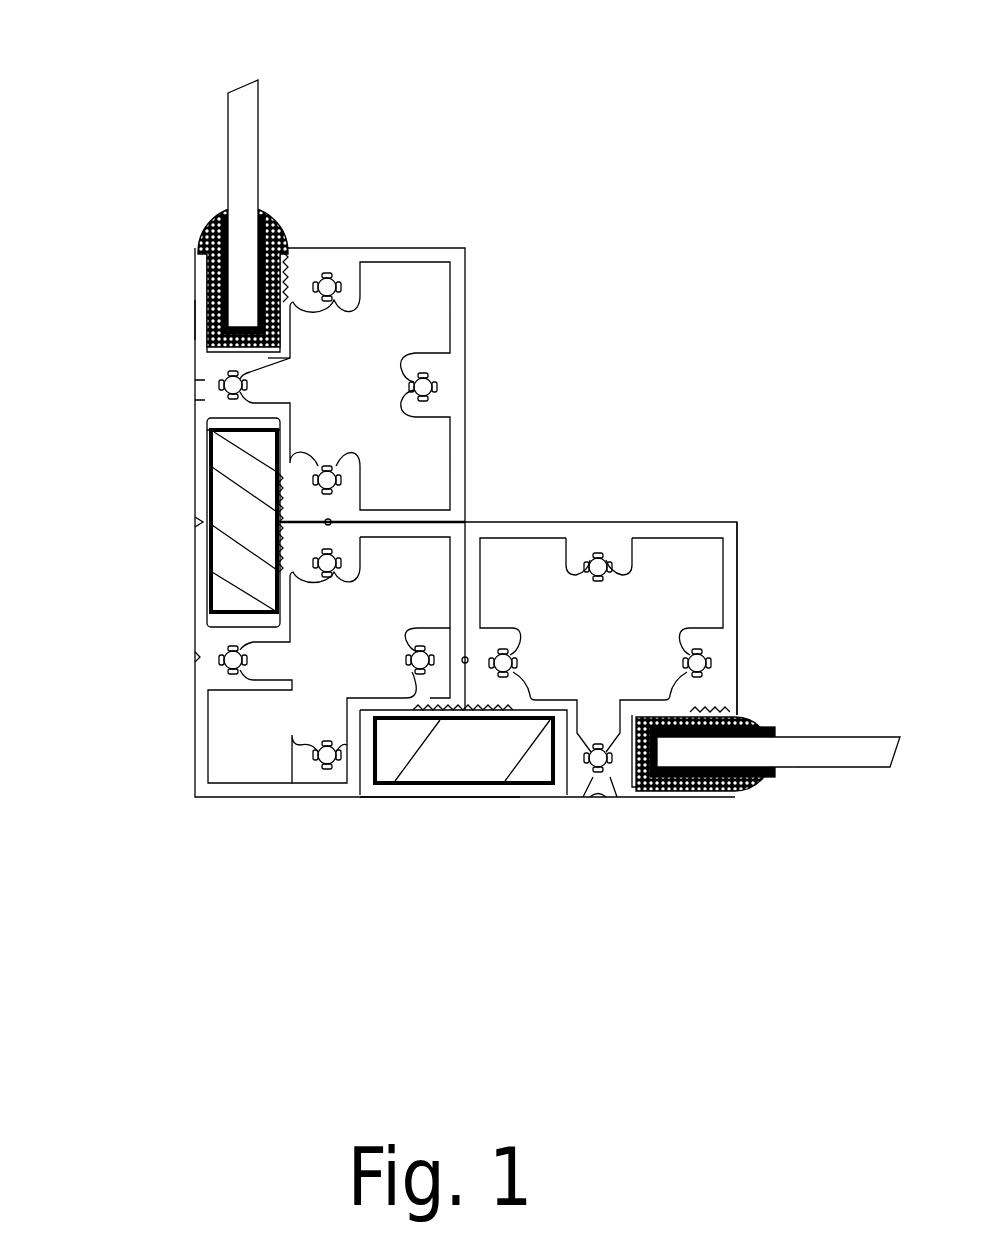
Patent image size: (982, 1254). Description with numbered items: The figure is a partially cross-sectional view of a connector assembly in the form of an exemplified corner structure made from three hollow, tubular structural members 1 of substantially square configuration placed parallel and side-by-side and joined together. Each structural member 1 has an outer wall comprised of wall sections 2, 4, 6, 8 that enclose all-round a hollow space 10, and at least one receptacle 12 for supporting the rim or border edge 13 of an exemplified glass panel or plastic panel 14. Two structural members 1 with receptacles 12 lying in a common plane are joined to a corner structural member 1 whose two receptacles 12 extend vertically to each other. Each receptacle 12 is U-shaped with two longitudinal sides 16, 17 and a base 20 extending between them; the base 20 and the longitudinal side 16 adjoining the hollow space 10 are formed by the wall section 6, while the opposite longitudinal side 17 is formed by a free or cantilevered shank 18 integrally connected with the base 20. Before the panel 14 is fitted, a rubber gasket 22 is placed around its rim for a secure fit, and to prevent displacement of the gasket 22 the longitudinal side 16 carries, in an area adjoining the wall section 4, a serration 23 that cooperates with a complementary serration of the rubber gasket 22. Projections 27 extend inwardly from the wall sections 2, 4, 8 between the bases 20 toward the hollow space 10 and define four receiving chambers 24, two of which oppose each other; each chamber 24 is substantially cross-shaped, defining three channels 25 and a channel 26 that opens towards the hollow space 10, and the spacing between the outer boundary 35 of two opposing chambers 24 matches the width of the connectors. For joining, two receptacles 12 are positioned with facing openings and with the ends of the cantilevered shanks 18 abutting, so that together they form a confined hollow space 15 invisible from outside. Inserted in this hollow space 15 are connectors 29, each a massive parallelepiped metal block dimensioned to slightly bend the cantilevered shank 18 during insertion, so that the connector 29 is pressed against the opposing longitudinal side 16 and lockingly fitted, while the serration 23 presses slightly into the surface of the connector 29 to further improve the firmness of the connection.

The structural member 1 is at (458, 287).
The wall section 2 is at (458, 328).
The wall section 4 is at (402, 253).
The wall section 6 is at (207, 393).
The wall section 8 is at (380, 512).
The hollow space 10 is at (352, 434).
The receptacle 12 is at (210, 273).
The rim or border edge 13 is at (245, 272).
The glass panel or plastic panel 14 is at (245, 100).
The confined hollow space 15 is at (233, 425).
The longitudinal side 16 is at (283, 323).
The longitudinal side 17 is at (197, 245).
The cantilevered shank 18 is at (200, 320).
The base 20 is at (295, 357).
The rubber gasket 22 is at (277, 217).
The serration 23 is at (280, 267).
The receiving chamber 24 is at (420, 378).
The channel 25 is at (218, 660).
The channel 26 is at (323, 590).
The projection 27 is at (607, 797).
The connector 29 is at (262, 537).
The outer boundary 35 is at (440, 384).